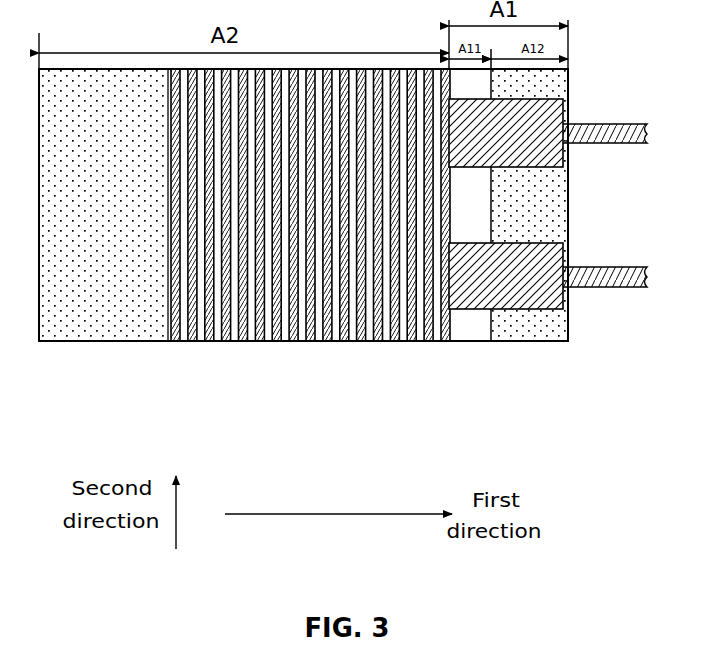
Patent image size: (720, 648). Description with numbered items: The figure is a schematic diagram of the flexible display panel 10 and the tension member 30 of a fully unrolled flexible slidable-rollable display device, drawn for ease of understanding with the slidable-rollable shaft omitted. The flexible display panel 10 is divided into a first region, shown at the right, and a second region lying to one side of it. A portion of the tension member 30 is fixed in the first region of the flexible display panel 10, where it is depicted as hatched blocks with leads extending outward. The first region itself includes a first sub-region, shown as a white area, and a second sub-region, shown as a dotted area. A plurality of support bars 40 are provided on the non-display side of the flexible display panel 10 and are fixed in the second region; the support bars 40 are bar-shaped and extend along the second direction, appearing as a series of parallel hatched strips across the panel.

The flexible display panel 10 is at (107, 326).
The support bars 40 is at (227, 341).
The tension member 30 is at (480, 310).